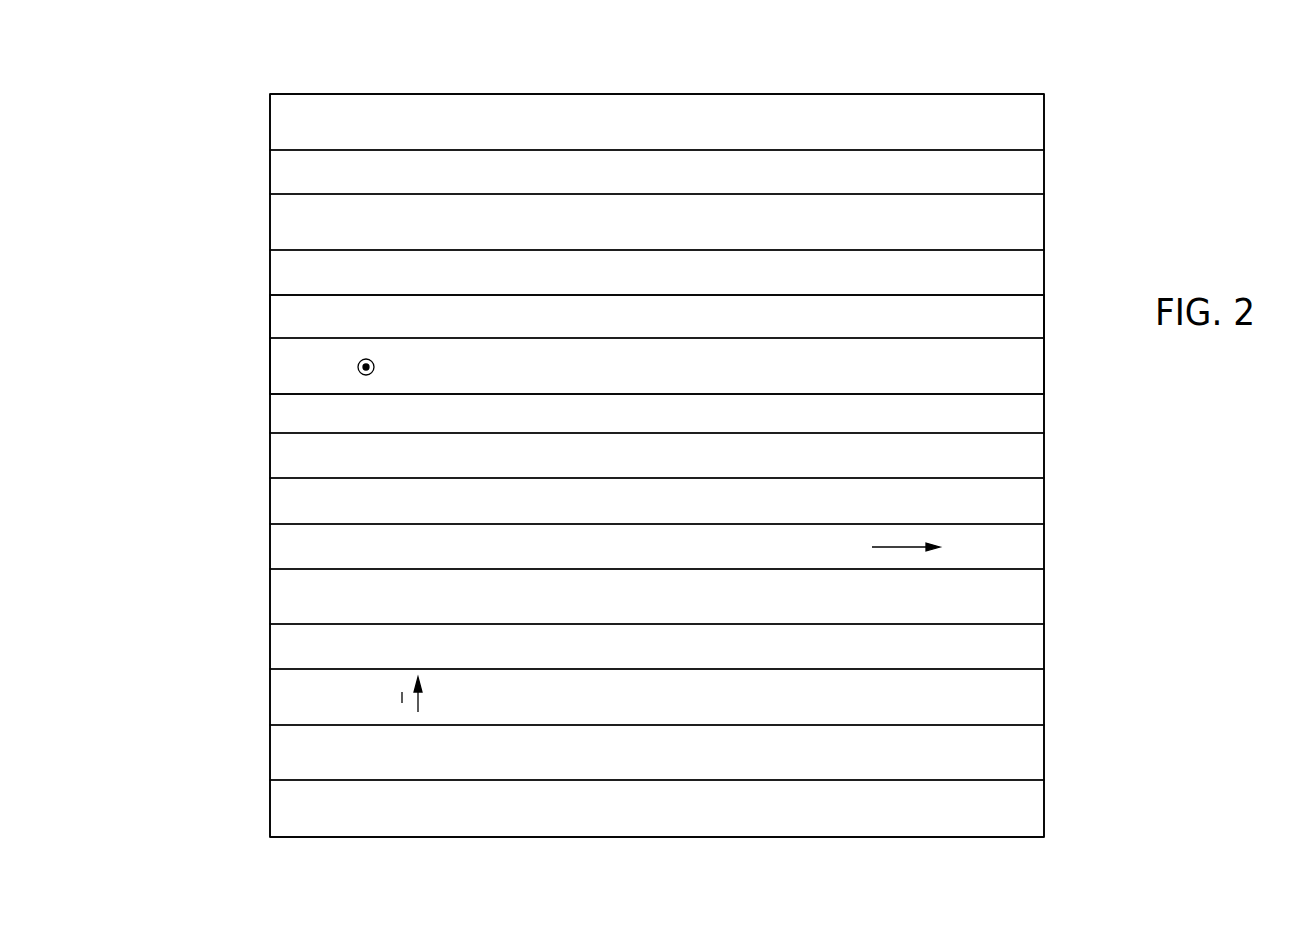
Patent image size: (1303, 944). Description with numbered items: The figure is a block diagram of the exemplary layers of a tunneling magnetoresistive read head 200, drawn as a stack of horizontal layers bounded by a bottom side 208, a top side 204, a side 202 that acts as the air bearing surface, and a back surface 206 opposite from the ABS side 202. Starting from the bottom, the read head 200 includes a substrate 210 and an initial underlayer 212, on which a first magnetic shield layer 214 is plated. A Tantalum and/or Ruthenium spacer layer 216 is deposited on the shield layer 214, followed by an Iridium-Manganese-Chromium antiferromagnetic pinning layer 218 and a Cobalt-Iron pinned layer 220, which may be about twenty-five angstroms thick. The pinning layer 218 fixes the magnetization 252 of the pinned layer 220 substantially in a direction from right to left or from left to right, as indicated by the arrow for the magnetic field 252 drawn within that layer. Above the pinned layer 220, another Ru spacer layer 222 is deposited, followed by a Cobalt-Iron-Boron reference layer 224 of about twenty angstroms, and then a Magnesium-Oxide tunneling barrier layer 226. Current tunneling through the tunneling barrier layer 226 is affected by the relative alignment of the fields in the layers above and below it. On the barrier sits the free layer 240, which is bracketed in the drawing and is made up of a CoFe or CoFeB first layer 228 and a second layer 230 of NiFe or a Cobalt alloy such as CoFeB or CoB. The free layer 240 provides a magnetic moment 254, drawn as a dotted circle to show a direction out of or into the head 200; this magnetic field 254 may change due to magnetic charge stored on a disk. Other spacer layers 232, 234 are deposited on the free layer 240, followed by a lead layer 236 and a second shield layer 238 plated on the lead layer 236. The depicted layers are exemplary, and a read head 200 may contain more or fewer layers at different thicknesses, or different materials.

The read head 200 is at (316, 90).
The side 202 is at (257, 595).
The top side 204 is at (692, 85).
The back surface 206 is at (1057, 597).
The bottom side 208 is at (692, 850).
The substrate 210 is at (677, 826).
The initial underlayer 212 is at (677, 765).
The first magnetic shield layer 214 is at (677, 713).
The Ta/Ru spacer layer 216 is at (677, 662).
The pinning layer 218 is at (678, 608).
The pinned layer 220 is at (678, 560).
The Ru spacer layer 222 is at (677, 513).
The reference layer 224 is at (679, 470).
The tunneling barrier layer 226 is at (678, 425).
The first layer 228 is at (678, 383).
The second layer 230 is at (678, 330).
The spacer layer 232 is at (678, 286).
The spacer layer 234 is at (678, 233).
The lead layer 236 is at (678, 184).
The second shield layer 238 is at (677, 132).
The free layer 240 is at (259, 295).
The magnetic field 252 is at (882, 547).
The magnetic field 254 is at (374, 365).